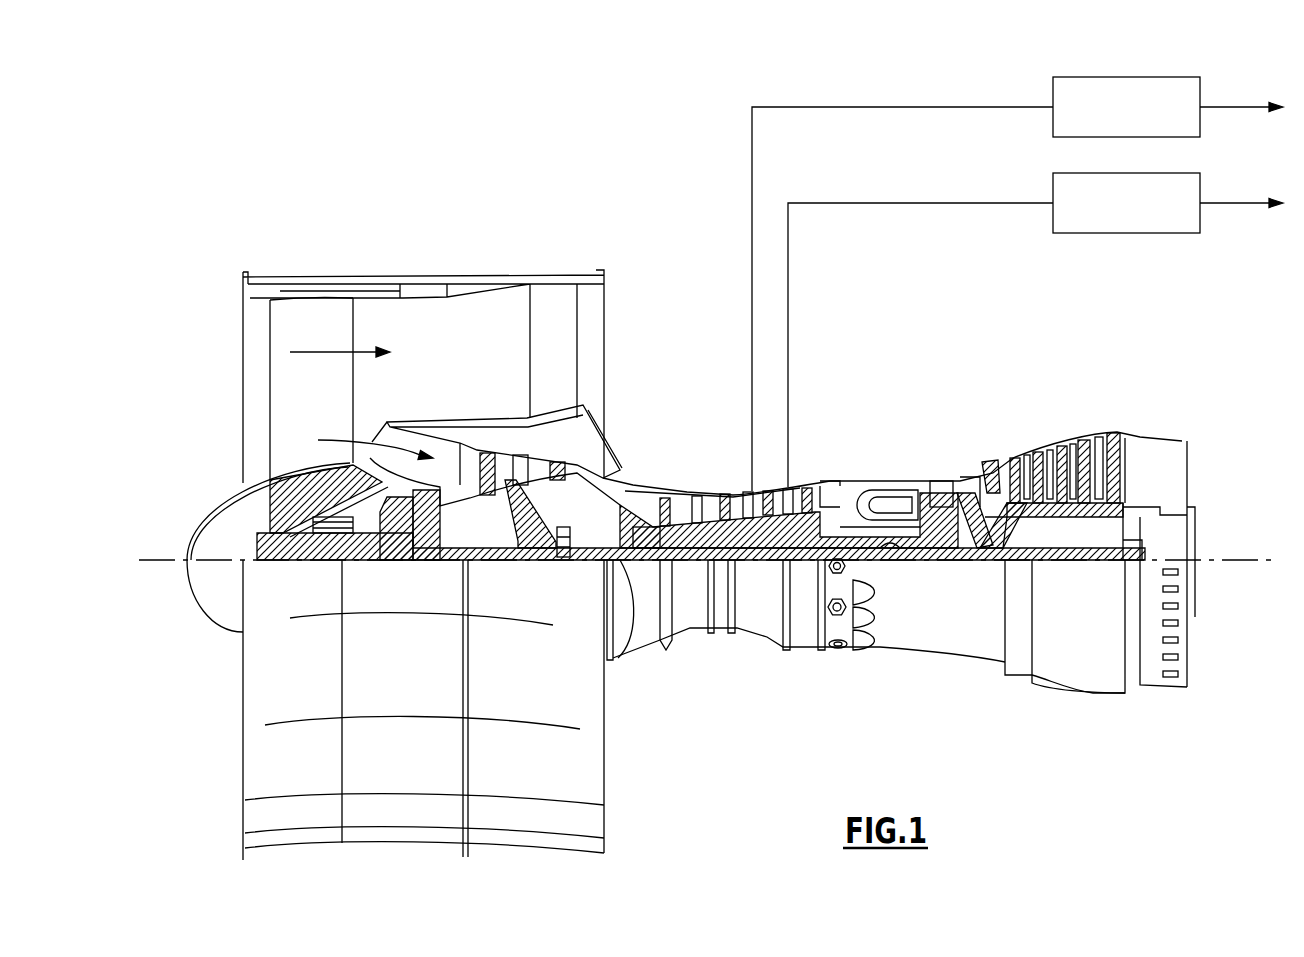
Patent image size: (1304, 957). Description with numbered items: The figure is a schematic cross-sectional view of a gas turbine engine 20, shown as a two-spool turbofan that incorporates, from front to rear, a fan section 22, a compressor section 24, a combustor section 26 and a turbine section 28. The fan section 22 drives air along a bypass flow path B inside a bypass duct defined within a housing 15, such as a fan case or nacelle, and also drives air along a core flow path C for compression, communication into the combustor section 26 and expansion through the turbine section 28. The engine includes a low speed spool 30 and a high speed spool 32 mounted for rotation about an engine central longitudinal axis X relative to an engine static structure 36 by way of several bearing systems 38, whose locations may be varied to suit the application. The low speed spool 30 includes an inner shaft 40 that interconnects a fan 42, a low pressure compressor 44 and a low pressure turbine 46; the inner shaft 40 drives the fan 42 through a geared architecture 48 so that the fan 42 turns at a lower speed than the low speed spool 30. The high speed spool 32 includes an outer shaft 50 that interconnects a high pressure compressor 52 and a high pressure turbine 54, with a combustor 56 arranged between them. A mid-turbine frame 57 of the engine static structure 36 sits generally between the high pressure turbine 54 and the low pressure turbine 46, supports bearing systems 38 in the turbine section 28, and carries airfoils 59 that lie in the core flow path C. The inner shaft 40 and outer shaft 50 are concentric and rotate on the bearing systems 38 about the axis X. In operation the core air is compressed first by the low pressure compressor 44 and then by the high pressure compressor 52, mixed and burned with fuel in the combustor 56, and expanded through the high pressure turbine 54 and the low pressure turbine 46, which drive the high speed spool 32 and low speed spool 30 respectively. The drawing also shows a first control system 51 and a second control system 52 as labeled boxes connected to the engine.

The housing 15 is at (425, 278).
The gas turbine engine 20 is at (884, 323).
The fan section 22 is at (354, 268).
The compressor section 24 is at (655, 463).
The combustor section 26 is at (878, 446).
The turbine section 28 is at (1026, 417).
The low speed spool 30 is at (762, 575).
The high speed spool 32 is at (807, 481).
The engine static structure 36 is at (803, 662).
The bearing systems 38 is at (558, 548).
The inner shaft 40 is at (619, 563).
The fan 42 is at (328, 404).
The low pressure compressor 44 is at (523, 468).
The low pressure turbine 46 is at (1067, 447).
The geared architecture 48 is at (425, 548).
The outer shaft 50 is at (892, 548).
The first control system 51 is at (1202, 185).
The high pressure compressor 52 is at (1202, 88).
The high pressure turbine 54 is at (945, 477).
The combustor 56 is at (877, 500).
The mid-turbine frame 57 is at (985, 469).
The airfoils 59 is at (983, 493).
The bypass flow path B is at (324, 346).
The core flow path C is at (369, 444).
The engine central longitudinal axis X is at (1272, 560).